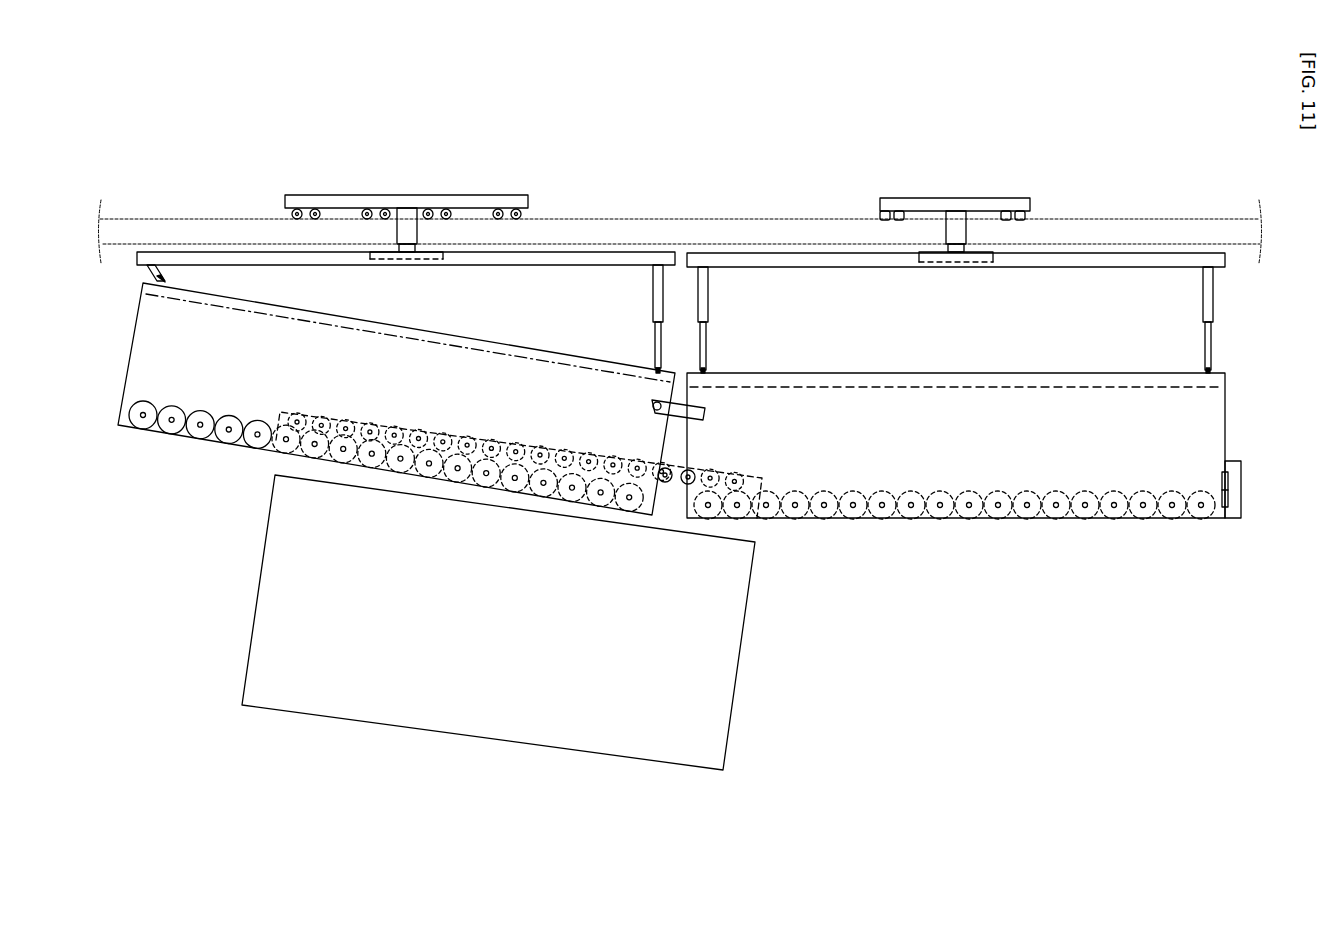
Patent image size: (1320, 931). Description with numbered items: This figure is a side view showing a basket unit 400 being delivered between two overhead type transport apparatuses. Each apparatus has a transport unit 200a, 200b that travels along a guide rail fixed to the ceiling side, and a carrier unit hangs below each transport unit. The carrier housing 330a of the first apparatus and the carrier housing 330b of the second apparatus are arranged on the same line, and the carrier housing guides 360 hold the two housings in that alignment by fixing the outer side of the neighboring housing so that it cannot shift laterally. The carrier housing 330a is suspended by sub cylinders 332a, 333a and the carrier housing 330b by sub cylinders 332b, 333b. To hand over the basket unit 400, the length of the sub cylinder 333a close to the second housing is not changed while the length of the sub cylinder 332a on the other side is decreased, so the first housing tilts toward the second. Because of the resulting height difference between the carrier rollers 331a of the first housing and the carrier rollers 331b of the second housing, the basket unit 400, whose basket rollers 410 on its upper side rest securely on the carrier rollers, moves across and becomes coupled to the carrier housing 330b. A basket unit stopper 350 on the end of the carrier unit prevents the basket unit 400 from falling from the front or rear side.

The transport unit 200a is at (407, 188).
The transport unit 200b is at (957, 190).
The carrier housing 330a is at (134, 322).
The carrier rollers 331a is at (143, 420).
The sub cylinder 332a is at (157, 263).
The sub cylinder 333a is at (658, 268).
The sub cylinder 332b is at (703, 268).
The sub cylinder 333b is at (1208, 268).
The carrier housing 330b is at (1175, 520).
The carrier rollers 331b is at (1115, 508).
The basket unit stopper 350 is at (1237, 520).
The carrier housing guide 360 is at (706, 414).
The basket unit 400 is at (743, 625).
The basket rollers 410 is at (296, 424).